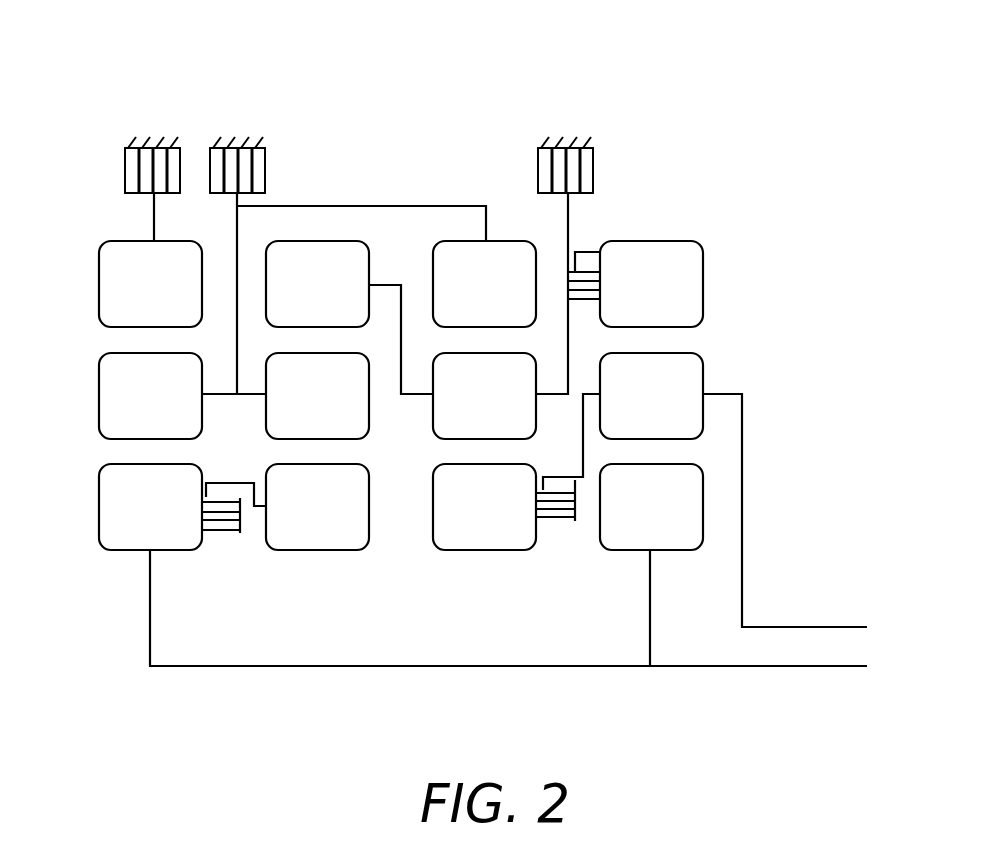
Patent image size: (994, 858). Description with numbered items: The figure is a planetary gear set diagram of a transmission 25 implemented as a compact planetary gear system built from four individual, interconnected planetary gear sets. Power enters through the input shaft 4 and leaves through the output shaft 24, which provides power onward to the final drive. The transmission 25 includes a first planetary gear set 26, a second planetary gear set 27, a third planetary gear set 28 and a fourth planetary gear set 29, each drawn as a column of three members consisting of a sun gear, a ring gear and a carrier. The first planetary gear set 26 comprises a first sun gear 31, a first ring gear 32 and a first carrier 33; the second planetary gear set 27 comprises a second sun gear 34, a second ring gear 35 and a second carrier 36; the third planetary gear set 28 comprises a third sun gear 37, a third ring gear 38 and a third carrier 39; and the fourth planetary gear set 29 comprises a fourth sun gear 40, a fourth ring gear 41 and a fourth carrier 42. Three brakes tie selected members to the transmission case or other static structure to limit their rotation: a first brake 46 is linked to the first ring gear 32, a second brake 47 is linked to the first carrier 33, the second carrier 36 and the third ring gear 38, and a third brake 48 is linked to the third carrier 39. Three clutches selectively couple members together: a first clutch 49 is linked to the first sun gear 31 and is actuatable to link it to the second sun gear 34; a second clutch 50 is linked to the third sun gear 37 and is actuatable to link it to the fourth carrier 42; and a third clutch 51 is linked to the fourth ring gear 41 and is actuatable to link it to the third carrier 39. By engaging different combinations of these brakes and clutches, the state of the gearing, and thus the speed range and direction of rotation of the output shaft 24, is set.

The input shaft 4 is at (835, 668).
The output shaft 24 is at (843, 627).
The transmission 25 is at (272, 28).
The first planetary gear set 26 is at (108, 565).
The second planetary gear set 27 is at (328, 568).
The third planetary gear set 28 is at (453, 565).
The fourth planetary gear set 29 is at (623, 565).
The first sun gear 31 is at (134, 523).
The first ring gear 32 is at (134, 300).
The first carrier 33 is at (134, 412).
The second sun gear 34 is at (334, 523).
The second ring gear 35 is at (334, 300).
The second carrier 36 is at (334, 412).
The third sun gear 37 is at (468, 523).
The third ring gear 38 is at (468, 300).
The third carrier 39 is at (468, 412).
The fourth sun gear 40 is at (668, 523).
The fourth ring gear 41 is at (668, 300).
The fourth carrier 42 is at (668, 412).
The first brake 46 is at (129, 146).
The second brake 47 is at (211, 146).
The third brake 48 is at (566, 146).
The first clutch 49 is at (226, 533).
The second clutch 50 is at (550, 477).
The third clutch 51 is at (590, 250).